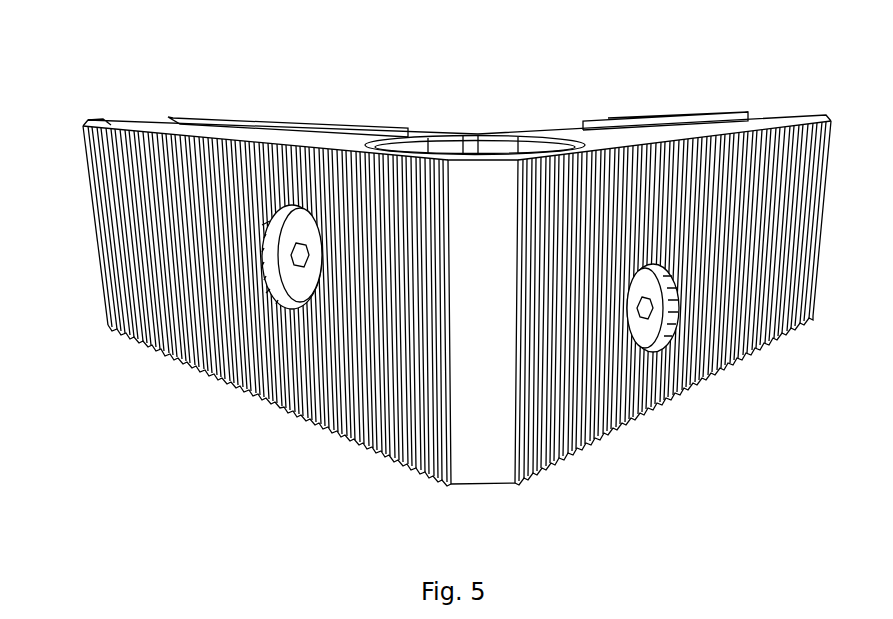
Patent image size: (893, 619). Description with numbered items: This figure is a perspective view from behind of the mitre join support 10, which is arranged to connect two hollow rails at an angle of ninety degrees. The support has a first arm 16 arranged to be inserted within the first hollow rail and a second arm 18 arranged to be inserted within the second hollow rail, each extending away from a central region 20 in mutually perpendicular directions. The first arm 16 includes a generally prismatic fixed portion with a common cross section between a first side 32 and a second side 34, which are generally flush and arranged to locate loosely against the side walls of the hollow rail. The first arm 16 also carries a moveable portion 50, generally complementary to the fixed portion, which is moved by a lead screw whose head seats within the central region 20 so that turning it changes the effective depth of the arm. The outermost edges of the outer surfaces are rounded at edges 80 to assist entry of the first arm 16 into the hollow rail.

The mitre join support 10 is at (275, 118).
The first arm 16 is at (282, 358).
The second arm 18 is at (735, 303).
The central region 20 is at (493, 435).
The first side 32 is at (118, 117).
The second side 34 is at (123, 327).
The moveable portion 50 is at (318, 112).
The rounded edges 80 is at (88, 228).